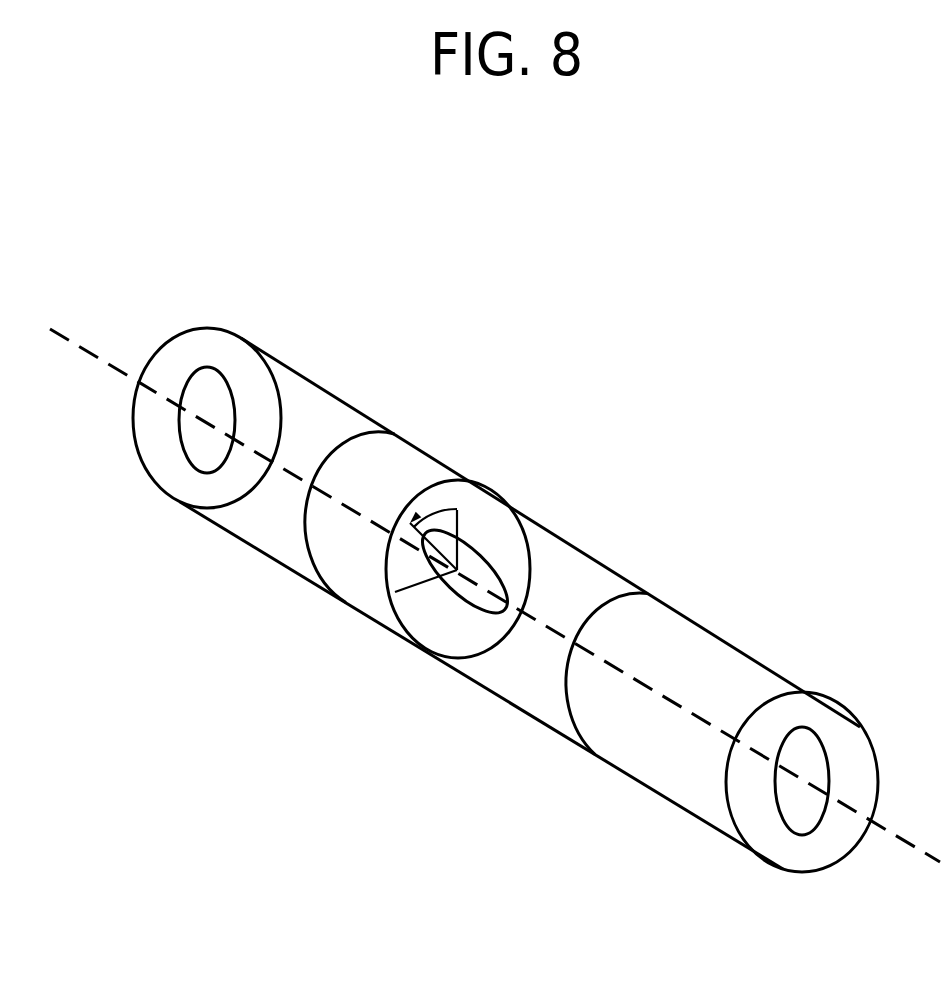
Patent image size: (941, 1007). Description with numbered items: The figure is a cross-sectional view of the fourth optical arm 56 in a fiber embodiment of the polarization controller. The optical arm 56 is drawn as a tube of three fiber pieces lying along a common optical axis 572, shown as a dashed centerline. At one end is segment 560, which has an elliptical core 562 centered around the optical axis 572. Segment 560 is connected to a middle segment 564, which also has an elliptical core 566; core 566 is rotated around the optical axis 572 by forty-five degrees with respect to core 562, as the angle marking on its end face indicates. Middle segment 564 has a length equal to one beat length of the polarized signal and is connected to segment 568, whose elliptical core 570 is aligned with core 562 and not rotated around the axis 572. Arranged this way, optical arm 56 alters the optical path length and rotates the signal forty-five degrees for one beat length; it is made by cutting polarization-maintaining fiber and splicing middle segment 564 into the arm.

The optical arm 56 is at (806, 194).
The segment 560 is at (173, 340).
The elliptical core 562 is at (207, 398).
The middle segment 564 is at (432, 451).
The elliptical core 566 is at (477, 565).
The segment 568 is at (685, 612).
The elliptical core 570 is at (820, 764).
The optical axis 572 is at (75, 344).